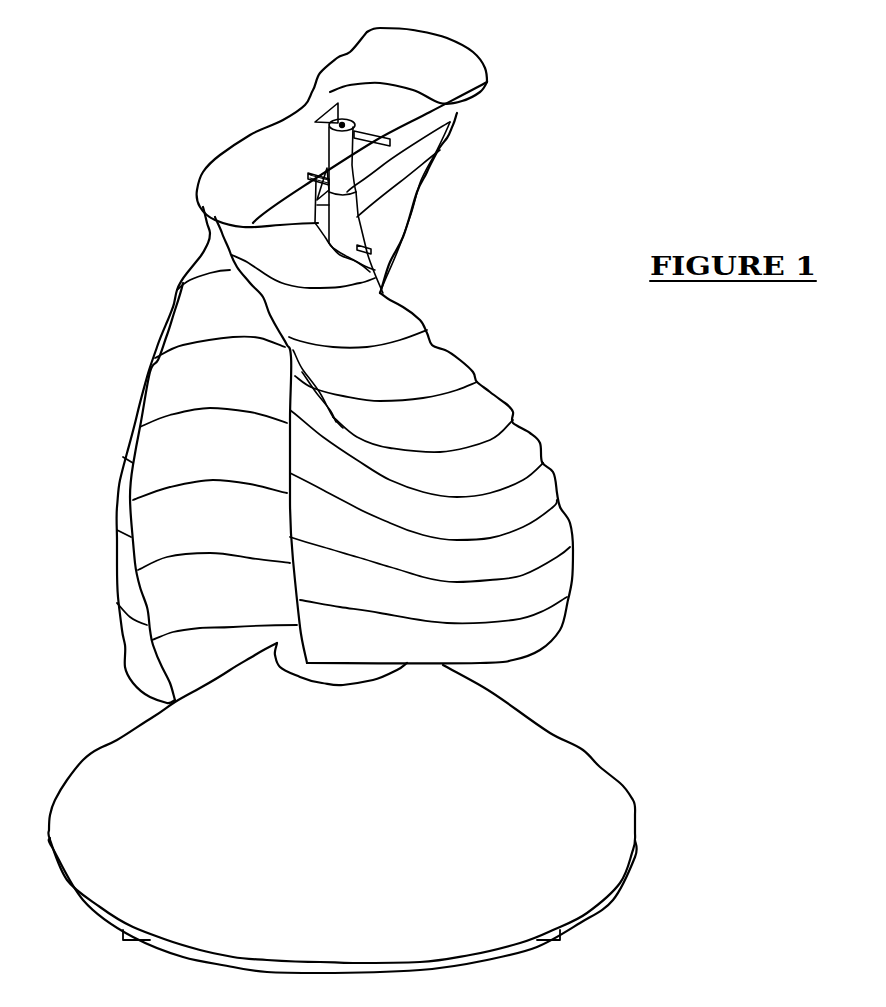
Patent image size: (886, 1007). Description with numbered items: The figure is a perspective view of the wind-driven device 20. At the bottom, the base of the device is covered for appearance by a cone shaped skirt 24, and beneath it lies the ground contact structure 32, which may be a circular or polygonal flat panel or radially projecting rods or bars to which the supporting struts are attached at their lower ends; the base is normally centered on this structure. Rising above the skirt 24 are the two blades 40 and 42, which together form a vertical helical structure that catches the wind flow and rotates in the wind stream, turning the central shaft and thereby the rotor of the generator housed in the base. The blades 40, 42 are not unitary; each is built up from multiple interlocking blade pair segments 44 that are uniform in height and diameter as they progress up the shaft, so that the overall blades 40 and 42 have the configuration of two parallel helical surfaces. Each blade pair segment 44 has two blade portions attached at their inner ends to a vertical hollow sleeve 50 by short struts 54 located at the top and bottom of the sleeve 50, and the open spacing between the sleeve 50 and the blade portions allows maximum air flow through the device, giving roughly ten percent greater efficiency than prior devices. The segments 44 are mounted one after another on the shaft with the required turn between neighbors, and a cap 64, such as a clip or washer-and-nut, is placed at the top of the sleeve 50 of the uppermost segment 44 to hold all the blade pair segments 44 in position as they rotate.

The device 20 is at (523, 252).
The cone shaped skirt 24 is at (373, 792).
The ground contact structure 32 is at (120, 932).
The blade 40 is at (540, 398).
The blade 42 is at (107, 390).
The blade pair segment 44 is at (117, 510).
The vertical hollow sleeve 50 is at (333, 156).
The short struts 54 is at (307, 176).
The cap 64 is at (323, 130).